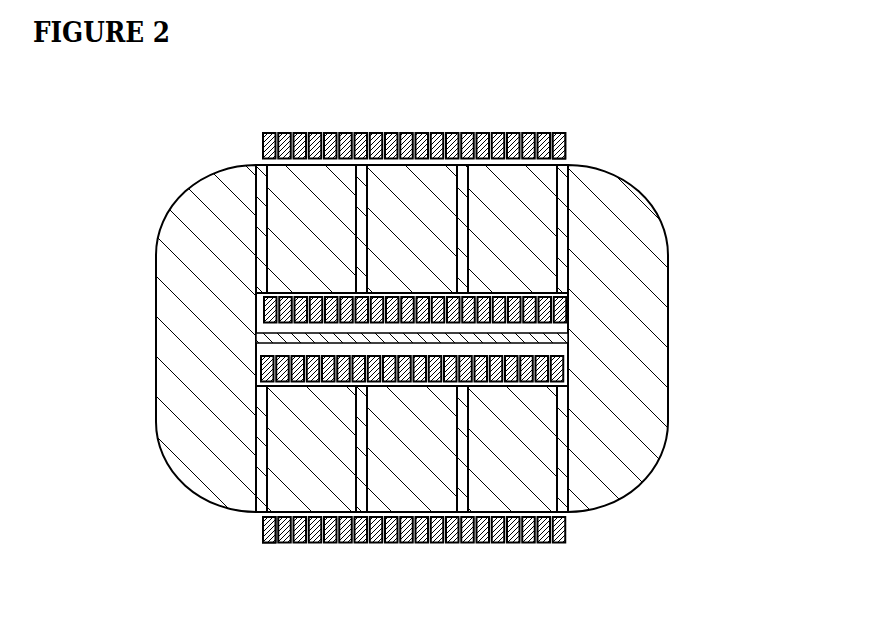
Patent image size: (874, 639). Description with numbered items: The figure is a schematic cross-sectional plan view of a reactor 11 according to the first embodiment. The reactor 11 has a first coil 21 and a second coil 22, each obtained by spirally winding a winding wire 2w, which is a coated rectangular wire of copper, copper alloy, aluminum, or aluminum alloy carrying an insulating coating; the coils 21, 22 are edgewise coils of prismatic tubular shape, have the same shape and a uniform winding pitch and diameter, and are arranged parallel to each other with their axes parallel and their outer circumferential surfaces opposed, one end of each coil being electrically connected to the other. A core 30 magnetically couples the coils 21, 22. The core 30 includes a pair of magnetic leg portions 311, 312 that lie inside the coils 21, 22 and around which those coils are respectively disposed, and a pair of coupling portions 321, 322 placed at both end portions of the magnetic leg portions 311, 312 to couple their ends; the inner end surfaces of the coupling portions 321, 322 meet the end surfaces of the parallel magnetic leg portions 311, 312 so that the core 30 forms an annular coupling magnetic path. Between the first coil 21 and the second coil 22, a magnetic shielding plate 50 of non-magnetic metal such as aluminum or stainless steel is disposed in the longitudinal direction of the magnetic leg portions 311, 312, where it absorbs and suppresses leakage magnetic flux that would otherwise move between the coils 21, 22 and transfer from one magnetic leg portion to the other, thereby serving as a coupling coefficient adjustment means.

The reactor 11 is at (672, 115).
The first coil 21 is at (562, 135).
The second coil 22 is at (392, 545).
The winding wire 2w is at (566, 147).
The core 30 is at (425, 358).
The magnetic leg portion 311 is at (256, 163).
The magnetic leg portion 312 is at (566, 514).
The coupling portion 321 is at (158, 342).
The coupling portion 322 is at (660, 302).
The magnetic shielding plate 50 is at (257, 343).